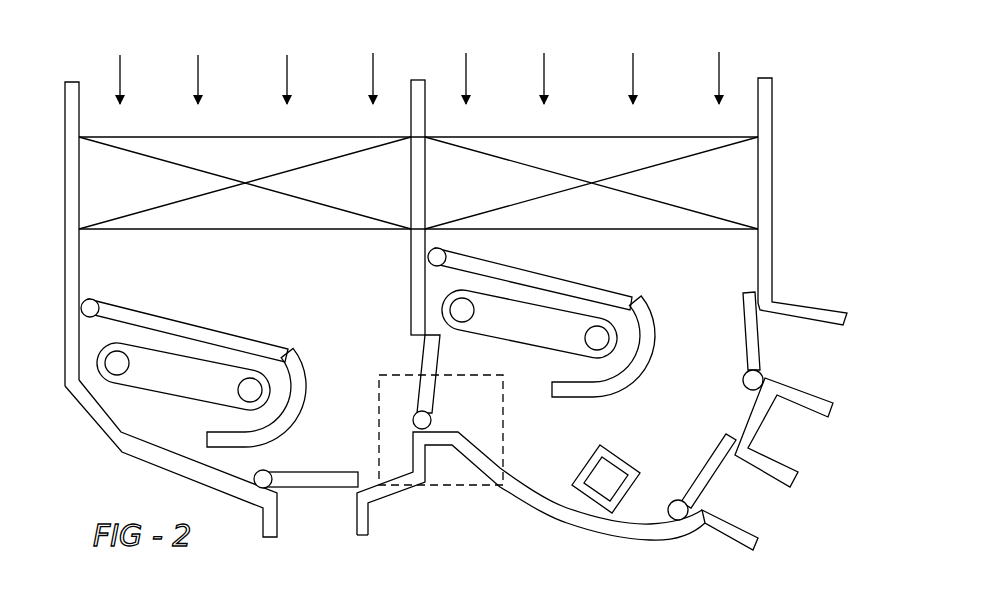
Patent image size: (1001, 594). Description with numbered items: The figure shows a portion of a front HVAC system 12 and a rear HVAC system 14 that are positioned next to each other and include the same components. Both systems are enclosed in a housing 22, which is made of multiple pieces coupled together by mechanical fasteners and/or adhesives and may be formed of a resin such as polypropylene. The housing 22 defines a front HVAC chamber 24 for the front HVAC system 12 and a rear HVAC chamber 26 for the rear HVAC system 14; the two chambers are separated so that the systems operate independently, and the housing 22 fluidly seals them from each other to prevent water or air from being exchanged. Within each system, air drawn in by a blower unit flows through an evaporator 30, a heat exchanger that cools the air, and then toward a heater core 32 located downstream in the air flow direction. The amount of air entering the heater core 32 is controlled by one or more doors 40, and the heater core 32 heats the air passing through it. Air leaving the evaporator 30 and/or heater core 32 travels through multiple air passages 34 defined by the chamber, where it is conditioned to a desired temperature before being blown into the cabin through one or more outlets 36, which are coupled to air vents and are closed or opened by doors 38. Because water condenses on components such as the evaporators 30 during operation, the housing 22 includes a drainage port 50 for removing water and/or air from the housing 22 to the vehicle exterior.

The front HVAC system 12 is at (745, 54).
The rear HVAC system 14 is at (50, 100).
The housing 22 is at (56, 306).
The front HVAC chamber 24 is at (505, 96).
The rear HVAC chamber 26 is at (393, 96).
The evaporator 30 is at (153, 136).
The heater core 32 is at (183, 403).
The air passages 34 is at (730, 256).
The outlets 36 is at (322, 510).
The doors 38 is at (318, 470).
The doors 40 is at (185, 322).
The drainage port 50 is at (503, 413).